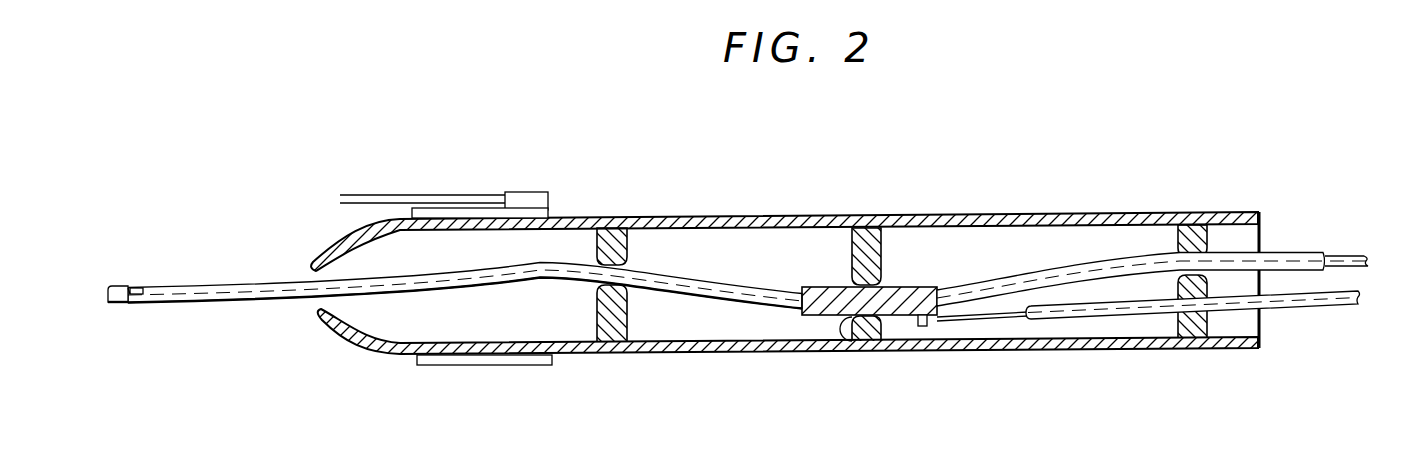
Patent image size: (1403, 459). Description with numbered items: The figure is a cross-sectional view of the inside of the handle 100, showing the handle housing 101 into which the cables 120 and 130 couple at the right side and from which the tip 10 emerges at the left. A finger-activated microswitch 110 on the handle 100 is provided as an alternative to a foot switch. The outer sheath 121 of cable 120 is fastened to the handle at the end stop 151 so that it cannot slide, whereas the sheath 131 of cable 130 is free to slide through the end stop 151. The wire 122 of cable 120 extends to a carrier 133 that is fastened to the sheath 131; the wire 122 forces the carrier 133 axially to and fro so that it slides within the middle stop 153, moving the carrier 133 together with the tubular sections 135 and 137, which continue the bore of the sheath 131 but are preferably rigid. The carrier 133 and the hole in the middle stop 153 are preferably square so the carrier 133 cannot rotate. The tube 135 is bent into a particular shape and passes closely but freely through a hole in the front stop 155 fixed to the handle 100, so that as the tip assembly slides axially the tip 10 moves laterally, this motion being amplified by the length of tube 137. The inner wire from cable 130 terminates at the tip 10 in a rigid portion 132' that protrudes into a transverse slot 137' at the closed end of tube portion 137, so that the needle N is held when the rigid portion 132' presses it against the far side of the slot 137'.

The handle 100 is at (520, 98).
The handle housing 101 is at (1153, 212).
The finger-activated microswitch 110 is at (367, 193).
The cable 120 is at (1330, 307).
The outer sheath 121 is at (1117, 310).
The wire 122 is at (1000, 317).
The cable 130 is at (1347, 252).
The sheath 131 is at (983, 287).
The carrier 133 is at (837, 341).
The tube 135 is at (646, 267).
The tube portion 137 is at (465, 266).
The transverse slot 137' is at (93, 259).
The rigid portion 132' is at (156, 259).
The end stop 151 is at (1227, 327).
The middle stop 153 is at (888, 219).
The front stop 155 is at (628, 323).
The needle N is at (135, 337).
The tip 10 is at (155, 324).